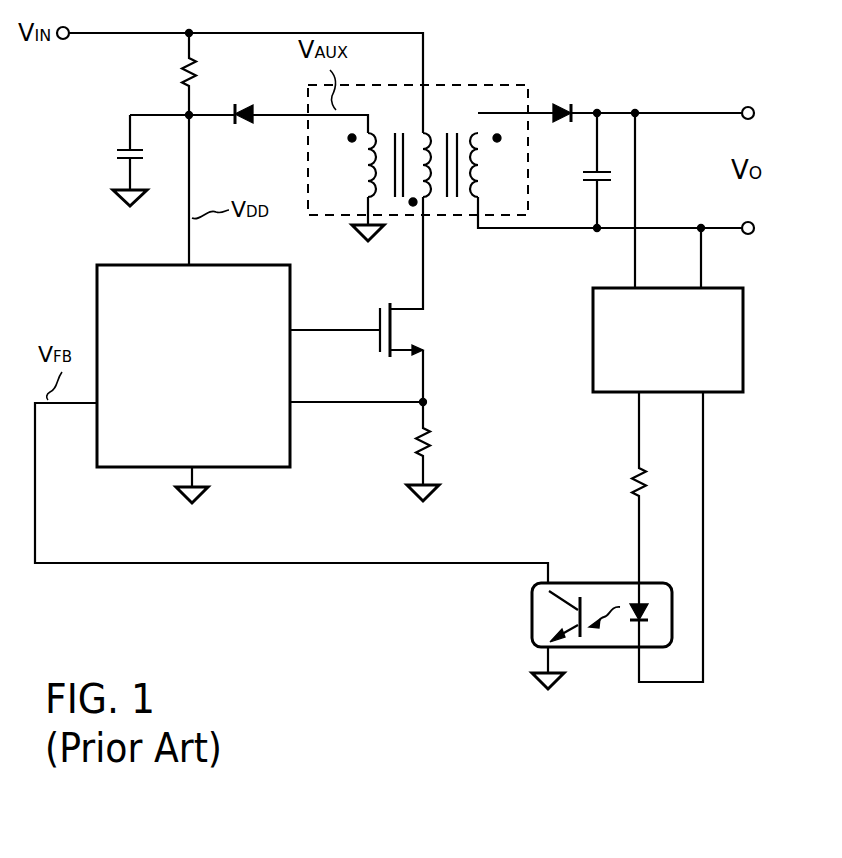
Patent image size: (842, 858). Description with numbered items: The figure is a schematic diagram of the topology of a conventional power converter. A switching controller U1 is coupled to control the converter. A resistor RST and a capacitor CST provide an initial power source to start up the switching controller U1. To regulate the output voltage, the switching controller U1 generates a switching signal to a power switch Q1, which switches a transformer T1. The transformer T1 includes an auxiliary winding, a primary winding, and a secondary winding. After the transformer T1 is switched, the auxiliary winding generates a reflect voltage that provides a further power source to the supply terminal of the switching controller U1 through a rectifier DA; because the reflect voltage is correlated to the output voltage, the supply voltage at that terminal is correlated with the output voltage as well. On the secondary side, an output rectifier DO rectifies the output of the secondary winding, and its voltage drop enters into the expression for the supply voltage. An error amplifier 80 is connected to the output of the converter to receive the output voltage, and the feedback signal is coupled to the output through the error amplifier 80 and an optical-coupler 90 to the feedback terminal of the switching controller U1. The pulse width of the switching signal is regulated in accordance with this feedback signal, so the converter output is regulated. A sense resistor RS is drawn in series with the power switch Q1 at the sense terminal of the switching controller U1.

The error amplifier 80 is at (750, 310).
The optical-coupler 90 is at (580, 583).
The switching controller U1 is at (193, 352).
The power switch Q1 is at (417, 330).
The transformer T1 is at (418, 132).
The resistor RST is at (165, 74).
The capacitor CST is at (106, 152).
The rectifier DA is at (246, 99).
The output rectifier DO is at (561, 97).
The sense resistor RS is at (440, 443).